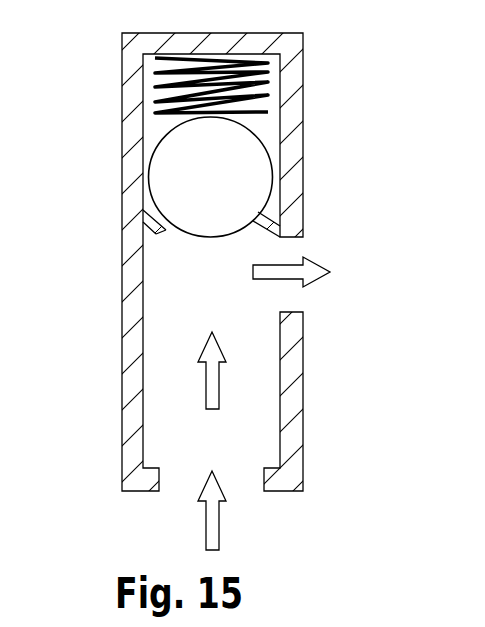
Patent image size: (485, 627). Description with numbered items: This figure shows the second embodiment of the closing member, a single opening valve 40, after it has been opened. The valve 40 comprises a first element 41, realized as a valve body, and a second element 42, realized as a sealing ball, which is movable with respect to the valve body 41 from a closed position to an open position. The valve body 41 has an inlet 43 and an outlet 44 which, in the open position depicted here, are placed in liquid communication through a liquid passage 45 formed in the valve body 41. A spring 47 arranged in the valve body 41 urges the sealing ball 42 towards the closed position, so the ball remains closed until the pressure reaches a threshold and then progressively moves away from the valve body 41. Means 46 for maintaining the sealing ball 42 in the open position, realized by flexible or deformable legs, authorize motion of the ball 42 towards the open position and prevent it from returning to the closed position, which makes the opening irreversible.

The valve 40 is at (96, 139).
The first element 41 is at (127, 313).
The second element 42 is at (253, 175).
The inlet 43 is at (241, 483).
The outlet 44 is at (293, 305).
The liquid passage 45 is at (167, 422).
The means for maintaining the sealing ball in the open position 46 is at (150, 215).
The spring 47 is at (257, 95).